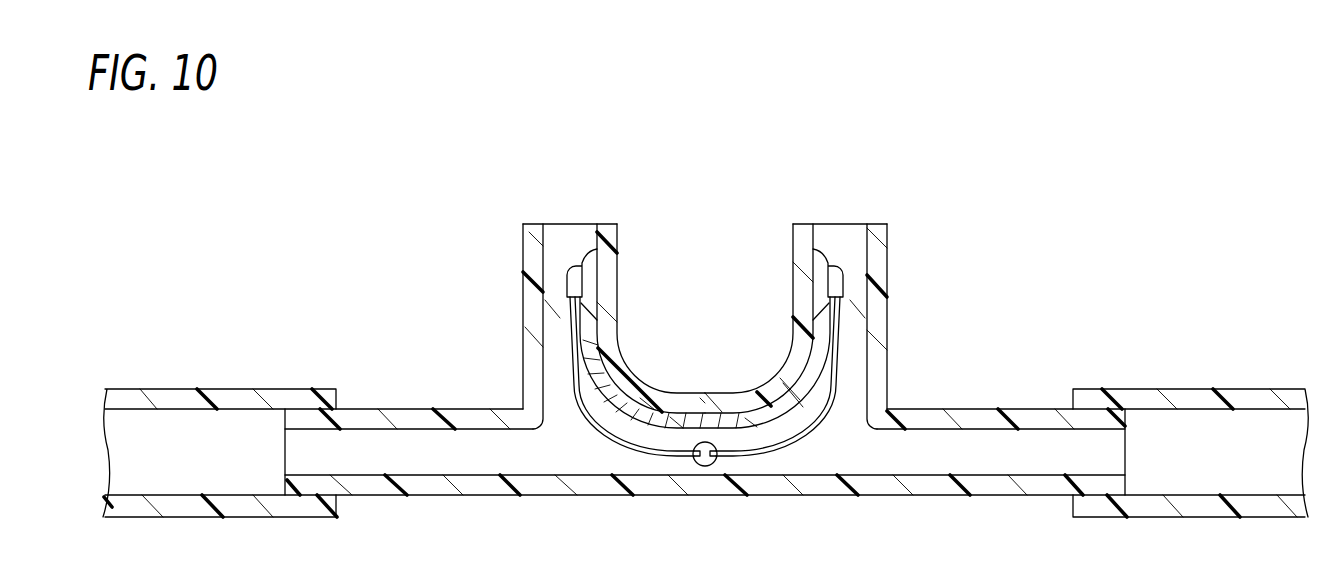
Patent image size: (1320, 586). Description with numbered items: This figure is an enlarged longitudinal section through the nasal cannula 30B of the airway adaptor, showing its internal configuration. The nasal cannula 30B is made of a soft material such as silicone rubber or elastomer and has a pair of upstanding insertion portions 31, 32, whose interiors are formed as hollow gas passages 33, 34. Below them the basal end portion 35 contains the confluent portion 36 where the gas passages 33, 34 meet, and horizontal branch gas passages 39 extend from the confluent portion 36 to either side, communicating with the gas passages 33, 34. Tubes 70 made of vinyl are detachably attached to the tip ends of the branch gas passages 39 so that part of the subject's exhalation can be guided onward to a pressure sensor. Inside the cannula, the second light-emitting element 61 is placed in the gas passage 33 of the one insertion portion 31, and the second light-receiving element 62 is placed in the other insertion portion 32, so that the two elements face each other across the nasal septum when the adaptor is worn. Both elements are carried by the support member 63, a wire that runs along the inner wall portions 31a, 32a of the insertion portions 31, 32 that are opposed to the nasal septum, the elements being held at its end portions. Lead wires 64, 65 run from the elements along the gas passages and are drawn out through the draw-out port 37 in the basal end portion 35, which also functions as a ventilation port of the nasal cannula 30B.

The nasal cannula 30B is at (362, 228).
The insertion portion 31 is at (887, 262).
The inner wall portion of insertion portion 31a is at (766, 366).
The insertion portion 32 is at (523, 262).
The inner wall portion of insertion portion 32a is at (622, 366).
The gas passage 33 is at (848, 333).
The gas passage 34 is at (563, 333).
The basal end portion 35 is at (660, 496).
The confluent portion 36 is at (763, 485).
The draw-out port 37 is at (705, 467).
The gas passage 39 is at (414, 445).
The second light-emitting element 61 is at (830, 263).
The second light-receiving element 62 is at (580, 263).
The support member 63 is at (833, 424).
The lead wire 64 is at (800, 450).
The lead wire 65 is at (597, 437).
The tube 70 is at (188, 388).